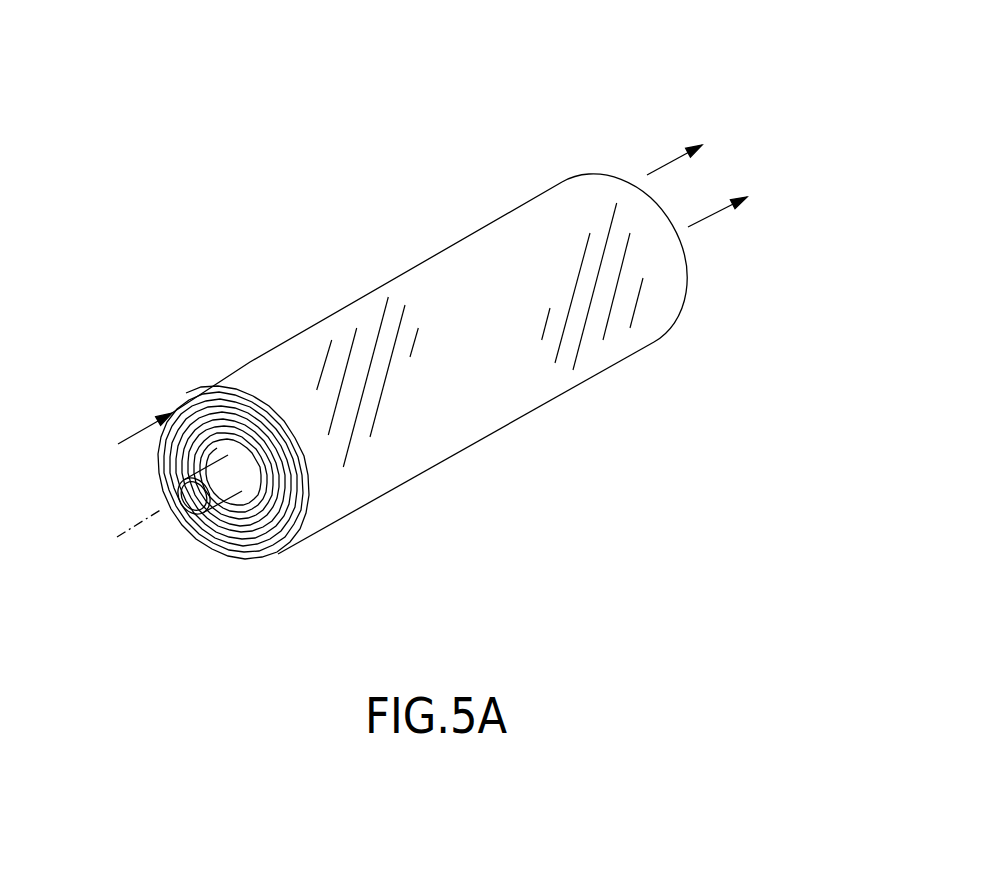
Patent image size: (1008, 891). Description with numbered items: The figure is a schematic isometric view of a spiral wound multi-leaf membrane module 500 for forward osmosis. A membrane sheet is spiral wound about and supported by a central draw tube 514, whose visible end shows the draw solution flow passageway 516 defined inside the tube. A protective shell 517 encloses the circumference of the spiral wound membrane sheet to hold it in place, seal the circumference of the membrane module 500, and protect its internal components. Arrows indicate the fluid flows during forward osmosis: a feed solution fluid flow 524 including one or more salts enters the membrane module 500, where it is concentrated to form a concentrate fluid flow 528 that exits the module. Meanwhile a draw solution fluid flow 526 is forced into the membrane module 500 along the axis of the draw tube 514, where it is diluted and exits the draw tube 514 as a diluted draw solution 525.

The membrane module 500 is at (580, 65).
The draw tube 514 is at (222, 500).
The draw solution flow passageway 516 is at (183, 508).
The protective shell 517 is at (637, 347).
The feed solution fluid flow 524 is at (130, 437).
The diluted draw solution 525 is at (741, 201).
The draw solution fluid flow 526 is at (147, 518).
The concentrate fluid flow 528 is at (693, 152).